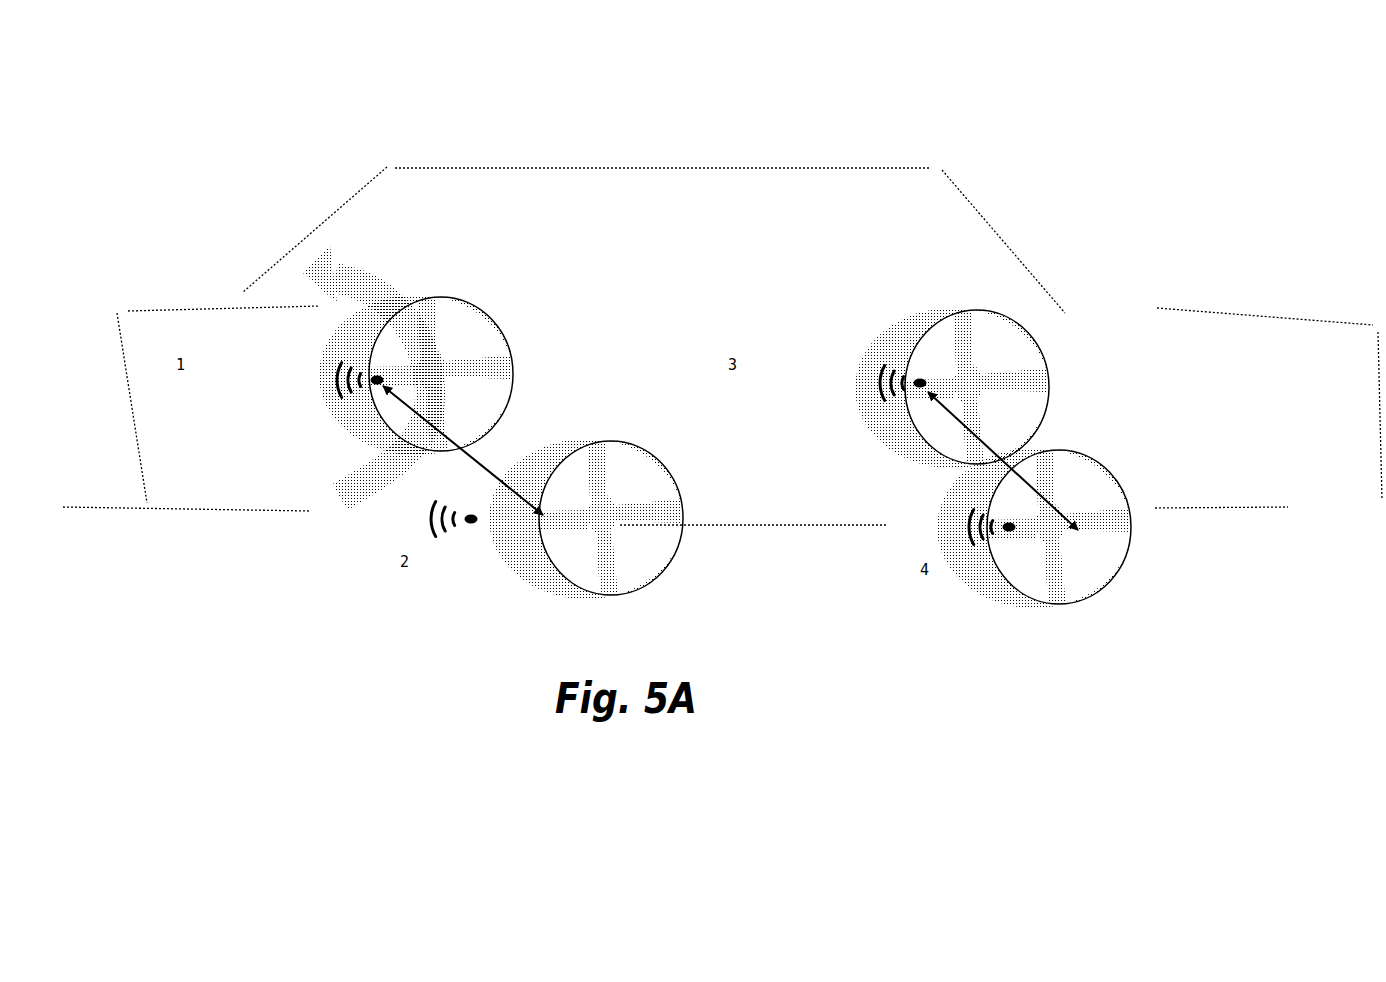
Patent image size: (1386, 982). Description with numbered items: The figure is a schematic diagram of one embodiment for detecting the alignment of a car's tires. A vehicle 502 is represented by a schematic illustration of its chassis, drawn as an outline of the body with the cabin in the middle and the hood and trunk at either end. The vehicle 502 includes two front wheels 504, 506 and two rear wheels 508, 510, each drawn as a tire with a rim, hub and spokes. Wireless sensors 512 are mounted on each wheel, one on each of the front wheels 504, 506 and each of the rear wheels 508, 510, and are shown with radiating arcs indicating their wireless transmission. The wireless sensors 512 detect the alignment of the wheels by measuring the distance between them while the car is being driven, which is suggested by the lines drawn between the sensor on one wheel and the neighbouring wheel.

The vehicle 502 is at (668, 167).
The front wheel 504 is at (333, 422).
The front wheel 506 is at (513, 572).
The rear wheel 508 is at (865, 435).
The rear wheel 510 is at (982, 590).
The wireless sensor 512 is at (337, 370).